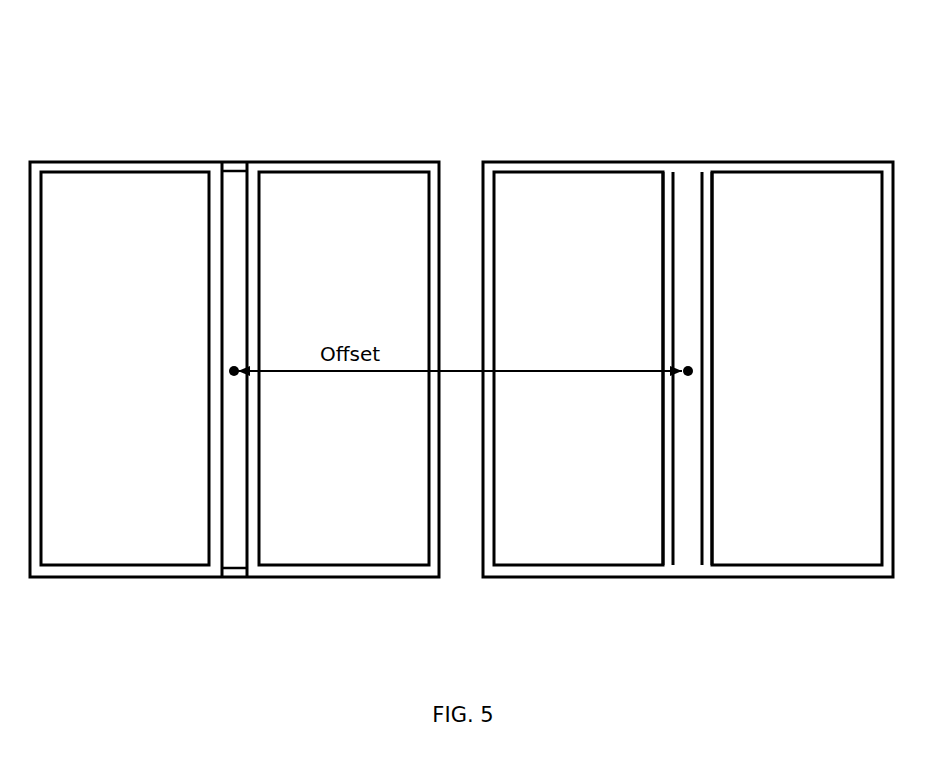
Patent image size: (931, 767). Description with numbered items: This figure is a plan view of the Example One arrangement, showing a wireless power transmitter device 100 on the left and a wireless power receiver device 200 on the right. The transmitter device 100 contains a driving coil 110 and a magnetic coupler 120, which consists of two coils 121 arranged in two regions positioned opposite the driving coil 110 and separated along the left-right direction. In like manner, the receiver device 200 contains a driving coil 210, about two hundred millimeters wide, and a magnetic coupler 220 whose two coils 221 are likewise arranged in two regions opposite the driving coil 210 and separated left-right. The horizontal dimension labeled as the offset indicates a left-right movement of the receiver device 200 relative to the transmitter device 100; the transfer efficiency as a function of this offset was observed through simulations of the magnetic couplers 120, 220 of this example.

The wireless power transmitter device 100 is at (343, 40).
The driving coil 110 is at (235, 167).
The magnetic coupler 120 is at (263, 593).
The coil 121 is at (127, 167).
The wireless power receiver device 200 is at (796, 40).
The driving coil 210 is at (580, 167).
The magnetic coupler 220 is at (718, 593).
The coil 221 is at (668, 182).